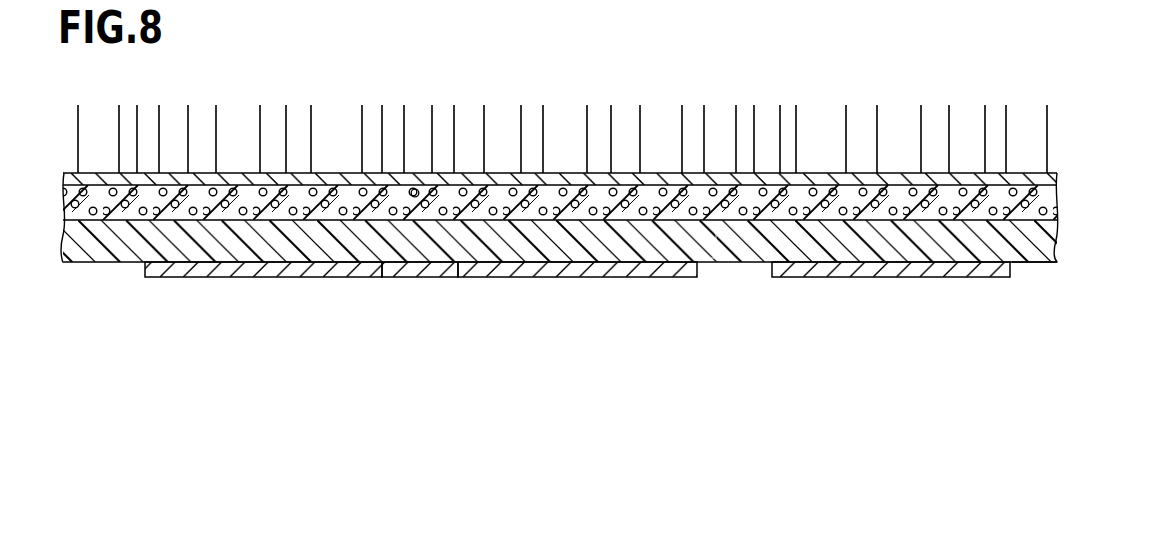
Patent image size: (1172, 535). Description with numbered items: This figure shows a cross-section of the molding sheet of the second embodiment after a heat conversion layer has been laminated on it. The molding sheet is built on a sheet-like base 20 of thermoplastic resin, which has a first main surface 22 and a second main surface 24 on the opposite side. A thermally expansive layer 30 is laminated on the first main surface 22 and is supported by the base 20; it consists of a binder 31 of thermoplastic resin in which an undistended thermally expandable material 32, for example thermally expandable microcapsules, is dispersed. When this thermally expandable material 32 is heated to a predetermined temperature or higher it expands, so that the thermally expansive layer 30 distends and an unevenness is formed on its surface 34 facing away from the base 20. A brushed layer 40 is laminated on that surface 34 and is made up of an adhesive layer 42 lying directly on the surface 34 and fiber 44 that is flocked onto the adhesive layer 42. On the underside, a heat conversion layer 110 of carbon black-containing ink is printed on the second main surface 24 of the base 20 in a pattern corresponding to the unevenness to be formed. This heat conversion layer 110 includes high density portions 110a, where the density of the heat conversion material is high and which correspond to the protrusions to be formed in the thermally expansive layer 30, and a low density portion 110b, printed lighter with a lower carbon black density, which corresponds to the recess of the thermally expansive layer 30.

The base 20 is at (1057, 254).
The first main surface 22 is at (713, 232).
The second main surface 24 is at (1033, 263).
The thermally expansive layer 30 is at (617, 208).
The binder 31 is at (1058, 197).
The thermally expandable material 32 is at (1047, 215).
The surface 34 is at (415, 191).
The brushed layer 40 is at (617, 145).
The adhesive layer 42 is at (1057, 173).
The fiber 44 is at (1048, 124).
The heat conversion layer 110 is at (577, 331).
The high density portion 110a is at (265, 278).
The low density portion 110b is at (420, 307).